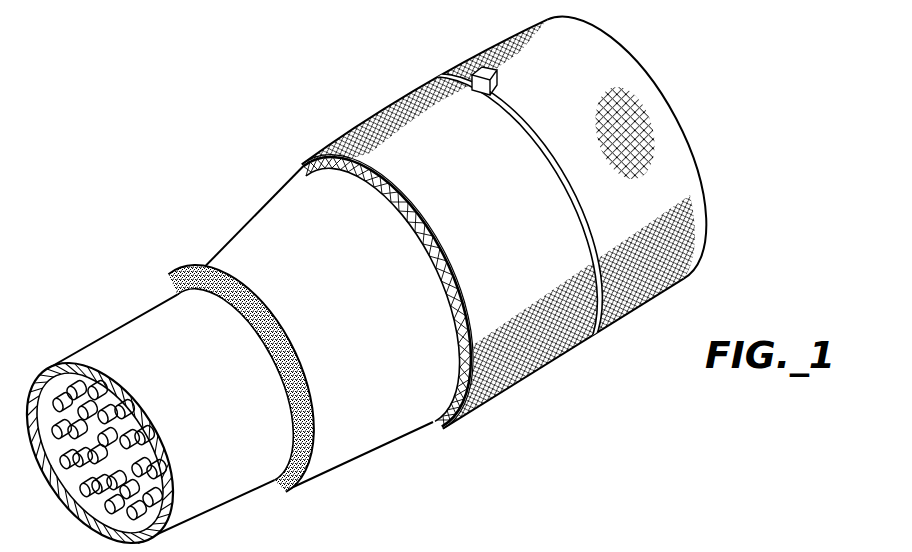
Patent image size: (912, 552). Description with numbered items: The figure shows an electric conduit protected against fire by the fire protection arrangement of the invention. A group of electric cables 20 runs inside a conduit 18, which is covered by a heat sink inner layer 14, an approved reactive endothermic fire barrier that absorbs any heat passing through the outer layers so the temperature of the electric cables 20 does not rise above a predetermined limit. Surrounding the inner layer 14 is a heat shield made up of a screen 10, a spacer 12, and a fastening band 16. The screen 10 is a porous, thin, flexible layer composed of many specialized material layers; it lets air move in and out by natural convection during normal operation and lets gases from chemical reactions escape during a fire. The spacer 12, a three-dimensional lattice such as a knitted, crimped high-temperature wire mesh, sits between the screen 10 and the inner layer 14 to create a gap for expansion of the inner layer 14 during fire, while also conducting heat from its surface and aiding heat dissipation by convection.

The screen 10 is at (428, 110).
The spacer 12 is at (277, 188).
The inner layer 14 is at (243, 230).
The fastening band 16 is at (528, 112).
The conduit 18 is at (112, 342).
The electric cables 20 is at (83, 518).